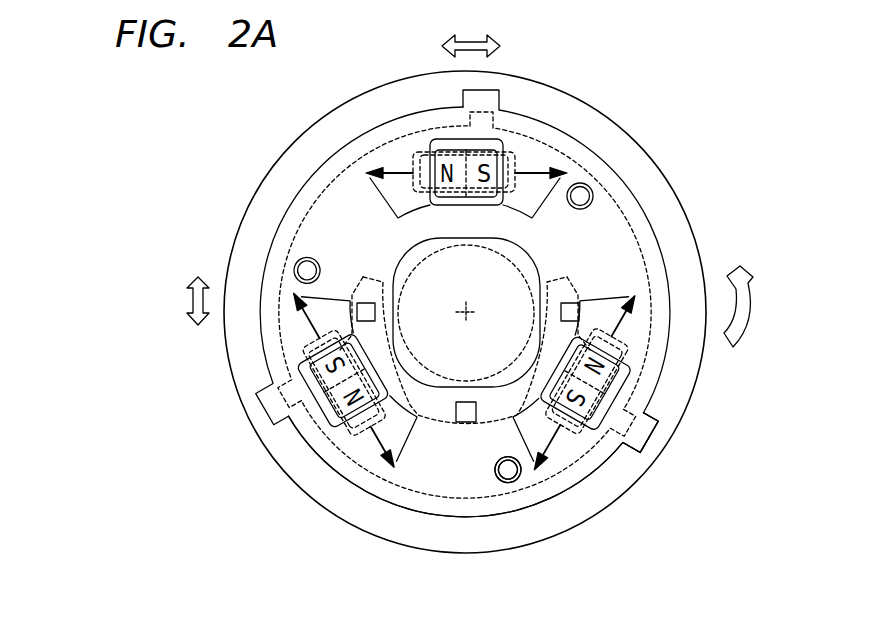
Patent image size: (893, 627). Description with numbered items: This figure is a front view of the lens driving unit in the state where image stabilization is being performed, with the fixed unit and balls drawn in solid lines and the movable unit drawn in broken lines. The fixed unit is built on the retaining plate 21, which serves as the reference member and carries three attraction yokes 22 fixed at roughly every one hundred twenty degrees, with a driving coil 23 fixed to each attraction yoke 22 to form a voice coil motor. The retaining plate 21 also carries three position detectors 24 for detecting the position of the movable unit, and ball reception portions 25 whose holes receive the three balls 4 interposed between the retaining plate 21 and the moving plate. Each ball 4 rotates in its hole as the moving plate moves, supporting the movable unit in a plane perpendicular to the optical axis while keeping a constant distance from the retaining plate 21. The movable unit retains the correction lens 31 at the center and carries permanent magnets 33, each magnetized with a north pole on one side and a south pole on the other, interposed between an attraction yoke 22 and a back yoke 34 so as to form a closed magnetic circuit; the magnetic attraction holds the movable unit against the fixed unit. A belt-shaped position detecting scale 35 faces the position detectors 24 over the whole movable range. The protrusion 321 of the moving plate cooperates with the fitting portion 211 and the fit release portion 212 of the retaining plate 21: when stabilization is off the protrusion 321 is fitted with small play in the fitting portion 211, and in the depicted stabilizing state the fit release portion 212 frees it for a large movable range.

The retaining plate 21 is at (640, 167).
The fitting portion 211 is at (601, 468).
The fit release portion 212 is at (642, 444).
The attraction yoke 22 is at (535, 168).
The driving coil 23 is at (471, 140).
The position detector 24 is at (351, 298).
The ball reception portion 25 is at (510, 483).
The ball 4 is at (538, 522).
The correction lens 31 is at (457, 362).
The permanent magnet 33 is at (457, 160).
The back yoke 34 is at (413, 158).
The position detecting scale 35 is at (366, 302).
The protrusion 321 is at (645, 424).